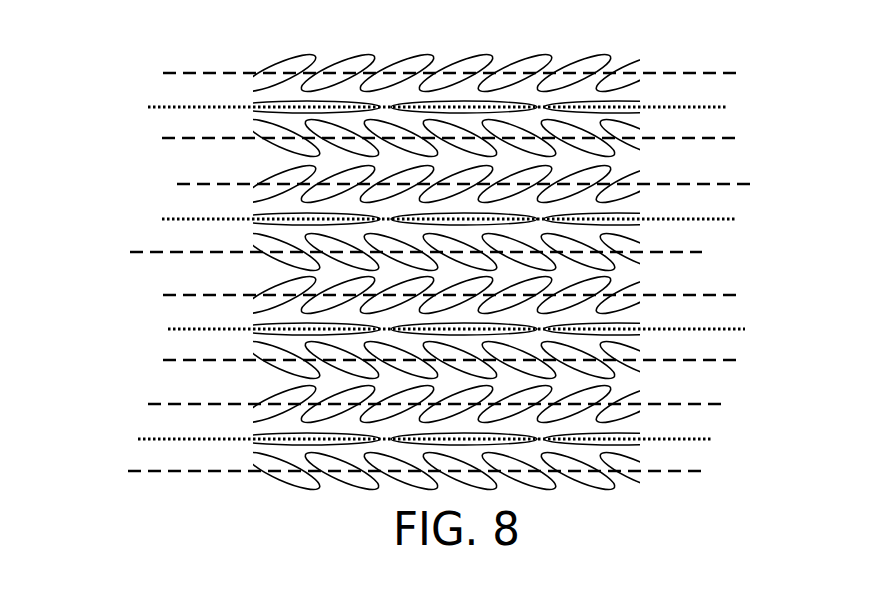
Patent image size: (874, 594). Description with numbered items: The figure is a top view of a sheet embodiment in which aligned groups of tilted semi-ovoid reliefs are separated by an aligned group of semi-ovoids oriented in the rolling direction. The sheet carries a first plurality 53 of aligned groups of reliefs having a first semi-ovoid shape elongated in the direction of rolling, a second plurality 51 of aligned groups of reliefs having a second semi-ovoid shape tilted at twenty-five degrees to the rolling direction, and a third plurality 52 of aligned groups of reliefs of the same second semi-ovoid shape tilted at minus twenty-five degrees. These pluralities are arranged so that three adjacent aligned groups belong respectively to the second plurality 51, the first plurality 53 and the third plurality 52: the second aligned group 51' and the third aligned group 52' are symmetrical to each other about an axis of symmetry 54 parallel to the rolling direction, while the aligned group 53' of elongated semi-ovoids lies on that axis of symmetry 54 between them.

The second plurality of aligned groups of reliefs 51 is at (390, 251).
The second aligned group 51' is at (473, 68).
The third plurality of aligned groups of reliefs 52 is at (480, 317).
The third aligned group 52' is at (474, 138).
The first plurality of aligned groups of reliefs 53 is at (441, 319).
The first aligned group 53' is at (479, 92).
The axis of symmetry 54 is at (732, 108).